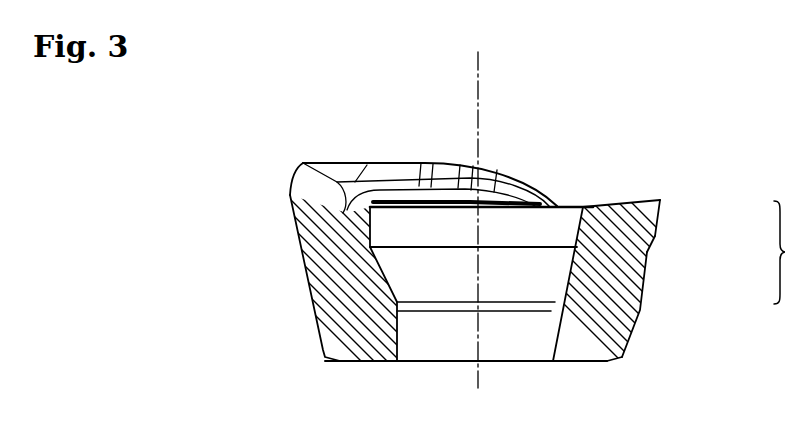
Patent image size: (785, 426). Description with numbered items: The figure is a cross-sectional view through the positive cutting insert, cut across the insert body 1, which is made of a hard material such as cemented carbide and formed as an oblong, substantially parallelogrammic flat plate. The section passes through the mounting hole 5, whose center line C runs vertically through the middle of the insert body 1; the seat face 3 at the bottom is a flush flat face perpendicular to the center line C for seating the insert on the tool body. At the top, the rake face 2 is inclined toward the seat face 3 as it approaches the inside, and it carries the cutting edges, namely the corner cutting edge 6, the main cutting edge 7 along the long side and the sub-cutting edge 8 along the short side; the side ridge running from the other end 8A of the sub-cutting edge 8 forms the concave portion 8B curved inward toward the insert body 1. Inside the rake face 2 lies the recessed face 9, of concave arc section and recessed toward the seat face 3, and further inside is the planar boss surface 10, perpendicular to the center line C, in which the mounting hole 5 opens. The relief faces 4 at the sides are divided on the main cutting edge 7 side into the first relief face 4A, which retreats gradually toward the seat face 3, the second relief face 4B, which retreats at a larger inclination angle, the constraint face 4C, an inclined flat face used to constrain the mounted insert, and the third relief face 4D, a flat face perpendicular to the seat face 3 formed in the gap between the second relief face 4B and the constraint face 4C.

The insert body 1 is at (268, 156).
The rake face 2 is at (300, 161).
The seat face 3 is at (582, 361).
The relief face 4 is at (300, 292).
The first relief face 4A is at (615, 208).
The second relief face 4B is at (655, 240).
The constraint face 4C is at (636, 318).
The third relief face 4D is at (649, 251).
The mounting hole 5 is at (570, 267).
The corner cutting edge 6 is at (335, 172).
The main cutting edge 7 is at (290, 190).
The sub-cutting edge 8 is at (380, 172).
The other end of the sub-cutting edge 8A is at (420, 163).
The concave portion 8B is at (526, 178).
The recessed face 9 is at (347, 178).
The boss surface 10 is at (583, 207).
The center line C is at (480, 94).